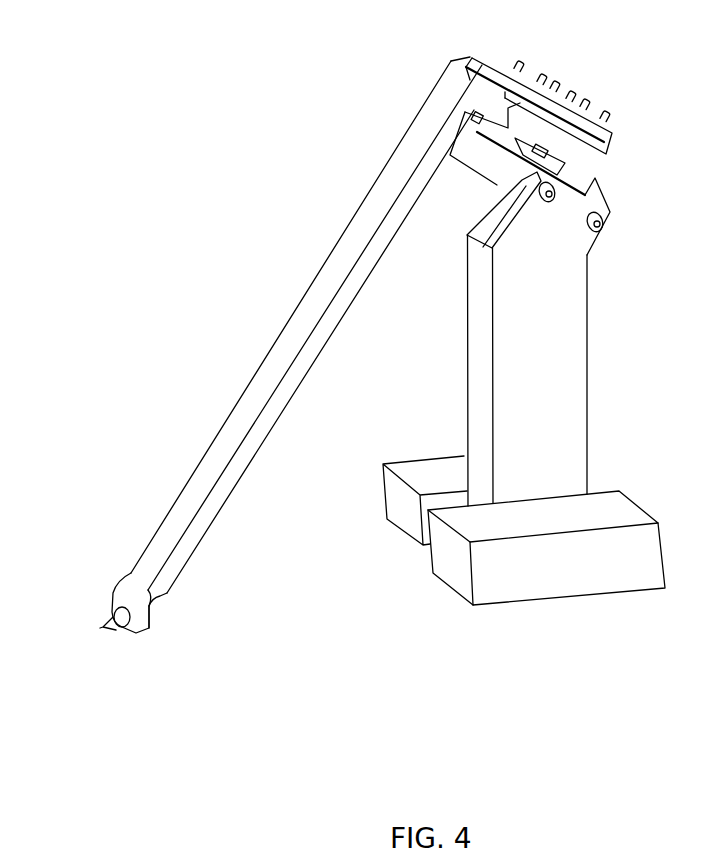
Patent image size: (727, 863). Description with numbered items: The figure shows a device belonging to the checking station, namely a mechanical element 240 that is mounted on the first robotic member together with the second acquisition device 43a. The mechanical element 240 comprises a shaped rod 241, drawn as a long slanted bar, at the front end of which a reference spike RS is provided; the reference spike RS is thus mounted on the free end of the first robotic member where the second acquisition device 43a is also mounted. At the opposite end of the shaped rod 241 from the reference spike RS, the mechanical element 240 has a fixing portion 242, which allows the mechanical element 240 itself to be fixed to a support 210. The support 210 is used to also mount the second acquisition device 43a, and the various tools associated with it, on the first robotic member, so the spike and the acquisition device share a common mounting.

The mechanical element 240 is at (218, 370).
The shaped rod 241 is at (279, 358).
The fixing portion 242 is at (458, 75).
The support 210 is at (588, 112).
The second acquisition device 43a is at (557, 565).
The reference spike RS is at (115, 621).